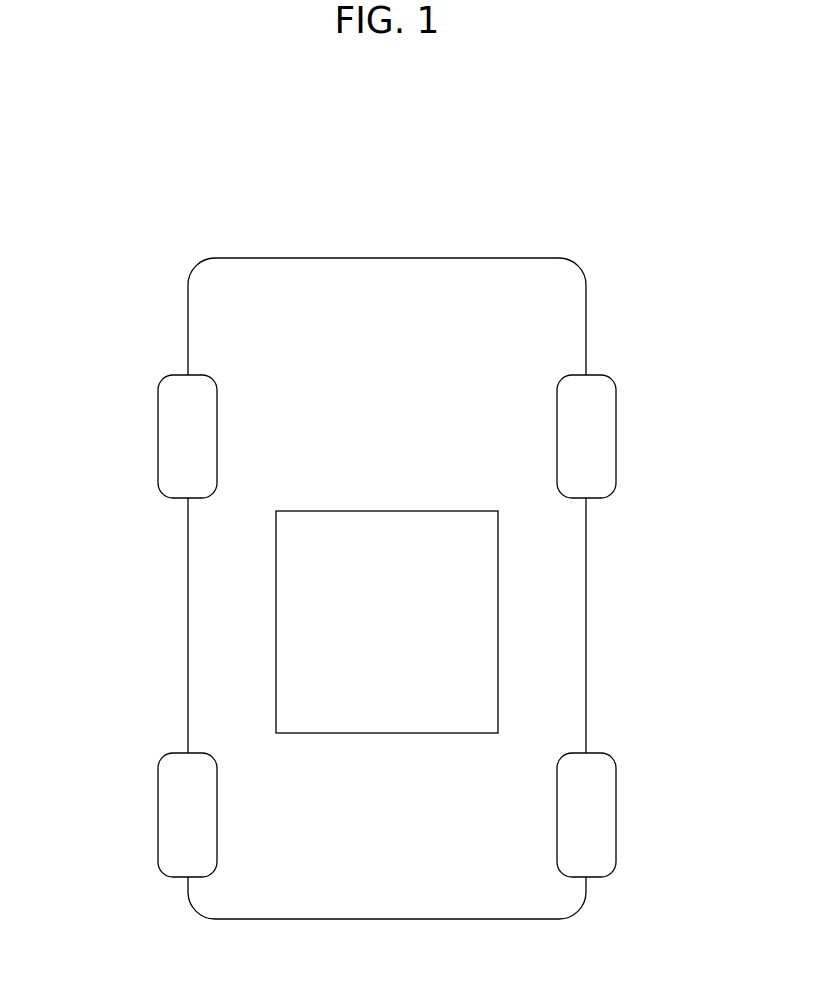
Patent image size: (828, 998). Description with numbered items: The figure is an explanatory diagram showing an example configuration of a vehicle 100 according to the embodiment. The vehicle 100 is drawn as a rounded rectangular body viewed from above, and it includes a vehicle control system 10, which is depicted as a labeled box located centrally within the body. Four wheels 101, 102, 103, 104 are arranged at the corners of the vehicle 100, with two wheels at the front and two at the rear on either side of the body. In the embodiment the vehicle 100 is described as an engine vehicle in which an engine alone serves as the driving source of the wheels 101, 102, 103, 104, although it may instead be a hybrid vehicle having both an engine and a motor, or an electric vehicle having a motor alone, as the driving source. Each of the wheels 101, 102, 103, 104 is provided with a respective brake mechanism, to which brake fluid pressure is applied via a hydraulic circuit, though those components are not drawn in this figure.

The vehicle 100 is at (118, 135).
The vehicle control system 10 is at (378, 511).
The wheel 101 is at (173, 792).
The wheel 102 is at (602, 404).
The wheel 103 is at (175, 407).
The wheel 104 is at (600, 810).